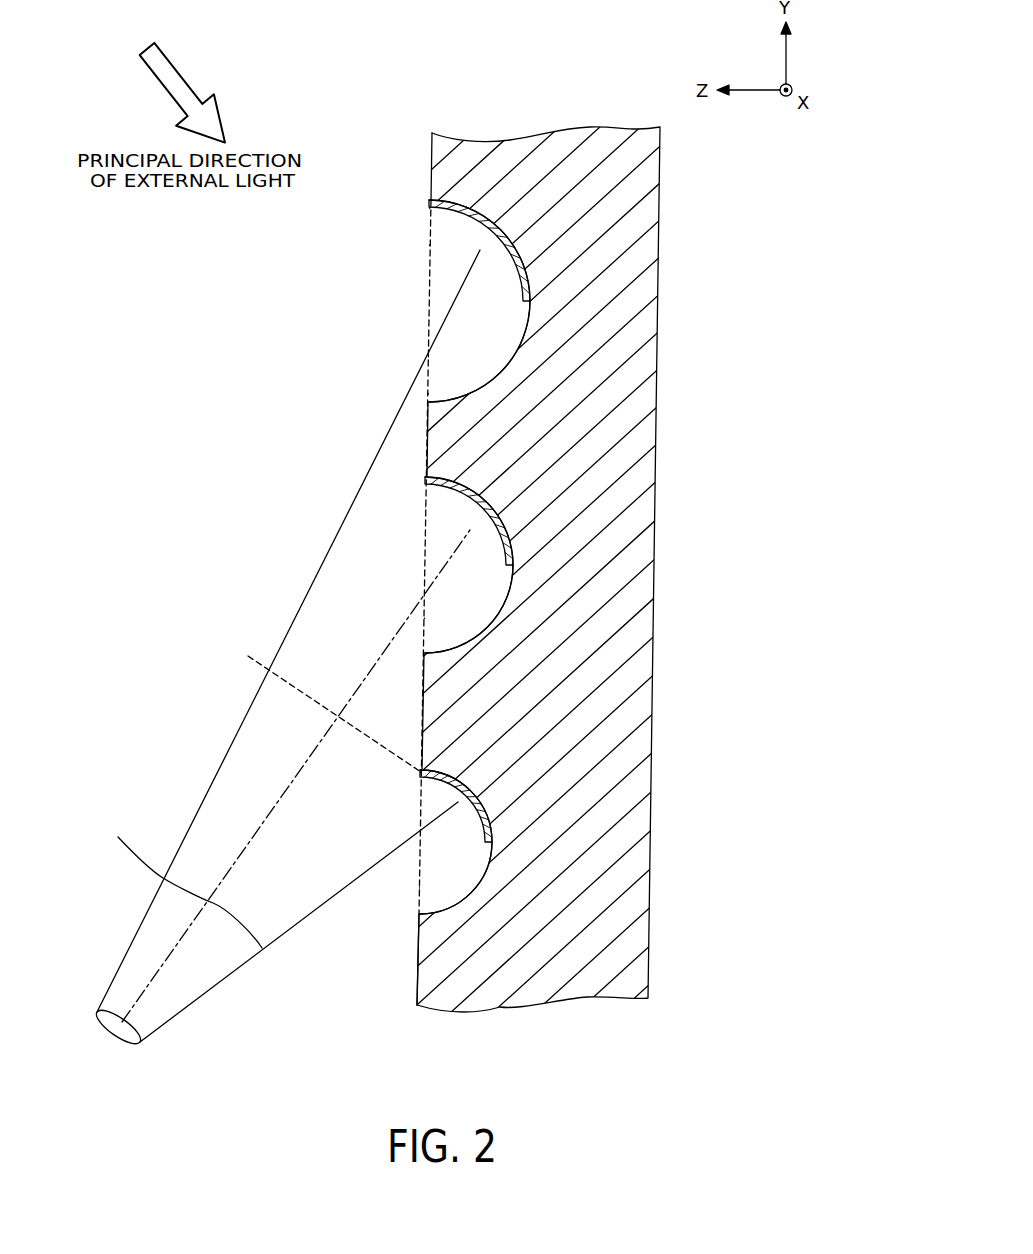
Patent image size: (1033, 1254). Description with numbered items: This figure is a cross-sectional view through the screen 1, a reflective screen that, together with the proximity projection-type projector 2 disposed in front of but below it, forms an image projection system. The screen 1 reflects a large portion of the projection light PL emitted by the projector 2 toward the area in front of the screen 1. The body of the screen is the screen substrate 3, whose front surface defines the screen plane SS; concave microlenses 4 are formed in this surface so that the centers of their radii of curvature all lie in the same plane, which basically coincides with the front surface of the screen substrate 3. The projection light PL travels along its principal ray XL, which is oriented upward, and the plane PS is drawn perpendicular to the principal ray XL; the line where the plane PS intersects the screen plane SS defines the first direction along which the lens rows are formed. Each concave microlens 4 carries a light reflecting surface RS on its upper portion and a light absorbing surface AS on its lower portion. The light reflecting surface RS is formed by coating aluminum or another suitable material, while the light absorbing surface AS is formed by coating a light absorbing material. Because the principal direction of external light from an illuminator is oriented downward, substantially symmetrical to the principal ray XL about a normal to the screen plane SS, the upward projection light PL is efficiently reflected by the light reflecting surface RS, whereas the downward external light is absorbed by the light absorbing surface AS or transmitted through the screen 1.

The screen 1 is at (556, 112).
The projector 2 is at (117, 1030).
The screen substrate 3 is at (432, 165).
The microlens 4 is at (525, 300).
The light reflecting surface RS is at (463, 225).
The light absorbing surface AS is at (480, 378).
The screen plane SS is at (417, 987).
The plane PS is at (287, 685).
The projection light PL is at (183, 839).
The principal ray XL is at (262, 830).